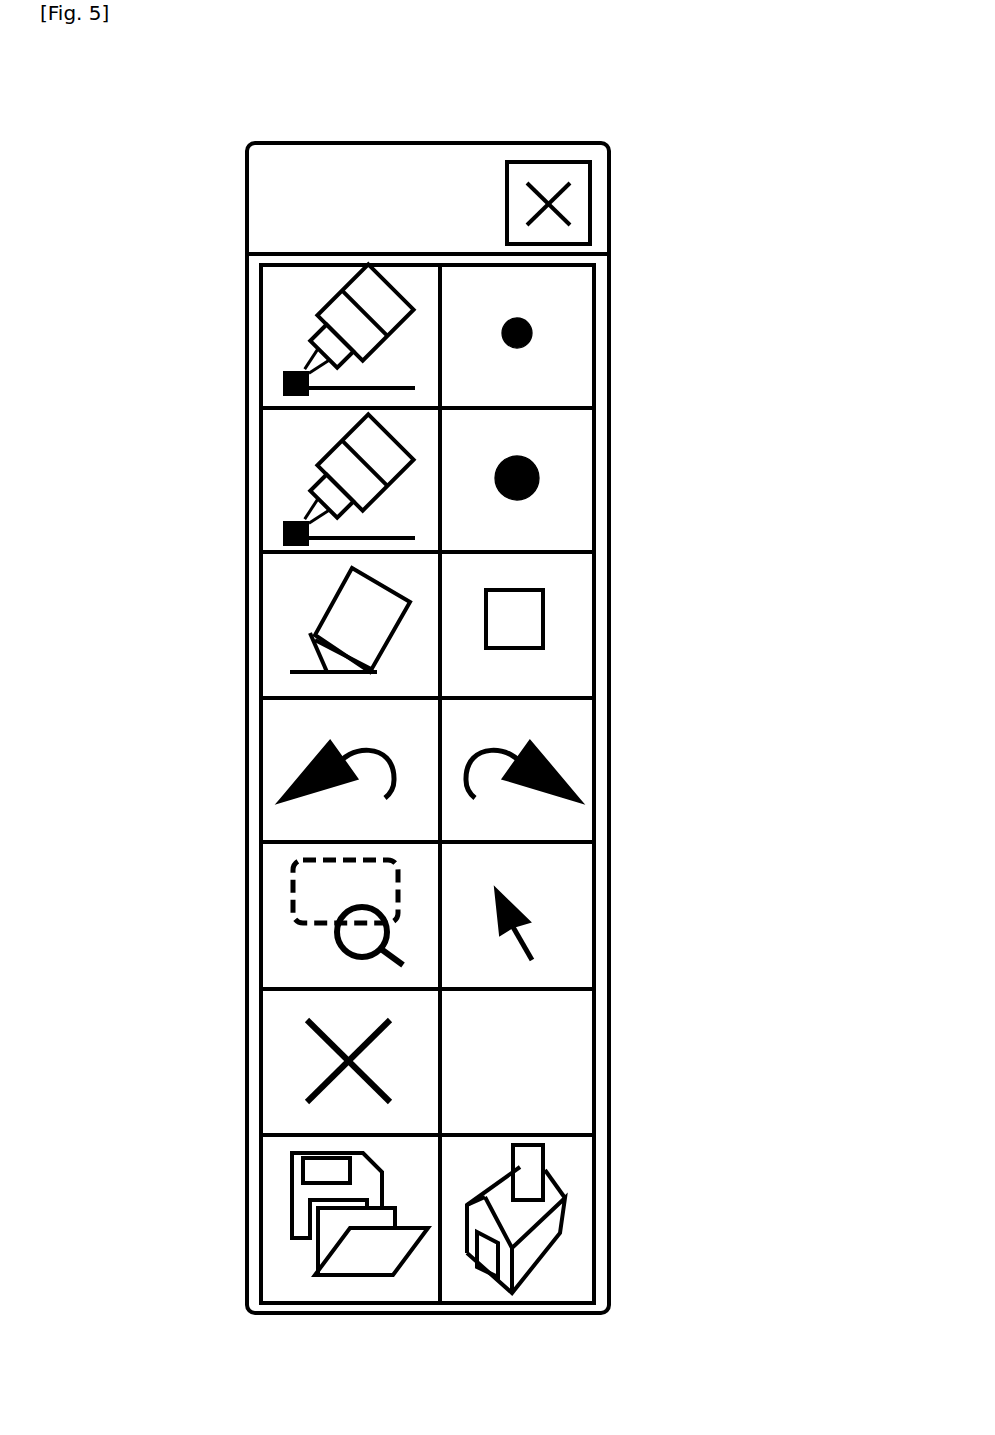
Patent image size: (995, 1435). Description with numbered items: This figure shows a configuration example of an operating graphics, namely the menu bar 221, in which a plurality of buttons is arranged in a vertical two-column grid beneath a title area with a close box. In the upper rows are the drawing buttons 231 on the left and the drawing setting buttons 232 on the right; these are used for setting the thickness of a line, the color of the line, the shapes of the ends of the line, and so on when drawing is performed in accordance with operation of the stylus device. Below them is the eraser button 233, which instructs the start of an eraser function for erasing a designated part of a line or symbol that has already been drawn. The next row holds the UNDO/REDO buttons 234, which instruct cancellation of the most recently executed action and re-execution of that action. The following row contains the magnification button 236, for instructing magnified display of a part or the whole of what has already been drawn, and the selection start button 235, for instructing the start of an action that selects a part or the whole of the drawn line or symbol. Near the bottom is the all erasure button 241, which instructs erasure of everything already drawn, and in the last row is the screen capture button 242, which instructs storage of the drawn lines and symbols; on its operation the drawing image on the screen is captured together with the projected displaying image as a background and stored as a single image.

The menu bar 221 is at (462, 145).
The drawing buttons 231 is at (277, 343).
The drawing setting buttons 232 is at (565, 343).
The eraser button 233 is at (280, 625).
The UNDO/REDO buttons 234 is at (282, 768).
The selection start button 235 is at (568, 903).
The magnification button 236 is at (282, 892).
The all erasure button 241 is at (282, 1060).
The screen capture button 242 is at (282, 1213).